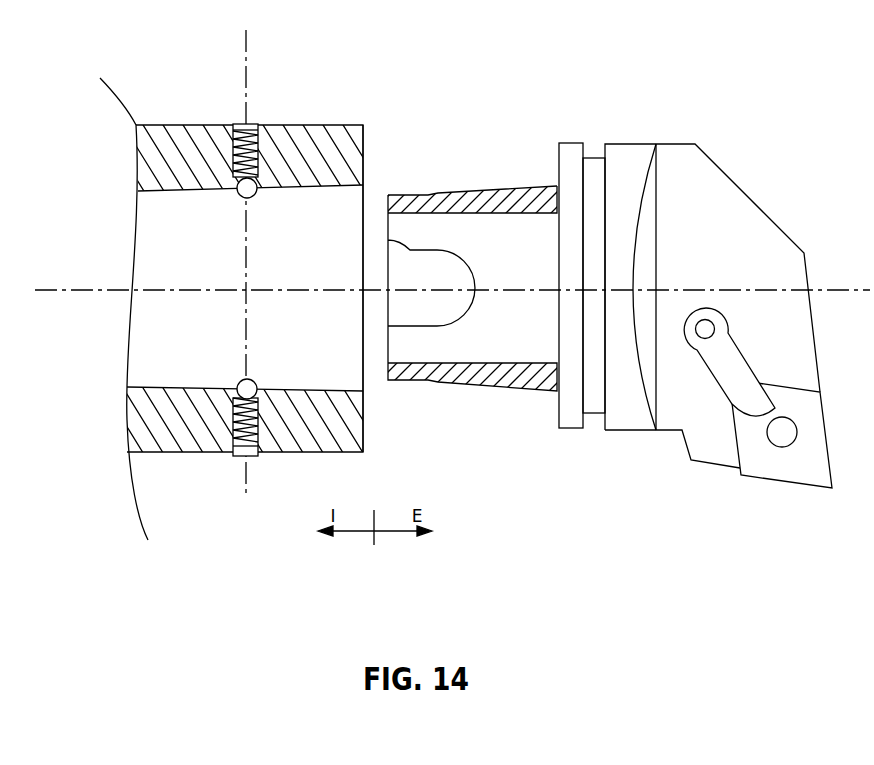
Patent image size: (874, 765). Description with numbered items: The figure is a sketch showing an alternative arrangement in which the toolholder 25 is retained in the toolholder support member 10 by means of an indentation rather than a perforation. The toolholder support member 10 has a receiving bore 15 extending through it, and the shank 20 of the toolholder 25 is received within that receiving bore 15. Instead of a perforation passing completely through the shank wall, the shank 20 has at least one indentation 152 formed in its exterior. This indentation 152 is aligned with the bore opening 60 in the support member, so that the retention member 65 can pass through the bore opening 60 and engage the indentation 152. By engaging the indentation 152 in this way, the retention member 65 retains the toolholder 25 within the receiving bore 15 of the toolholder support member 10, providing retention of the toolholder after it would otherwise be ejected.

The toolholder support member 10 is at (139, 125).
The receiving bore 15 is at (343, 345).
The shank 20 is at (465, 242).
The indentation 152 is at (440, 195).
The toolholder 25 is at (708, 157).
The bore opening 60 is at (244, 196).
The retention member 65 is at (251, 197).